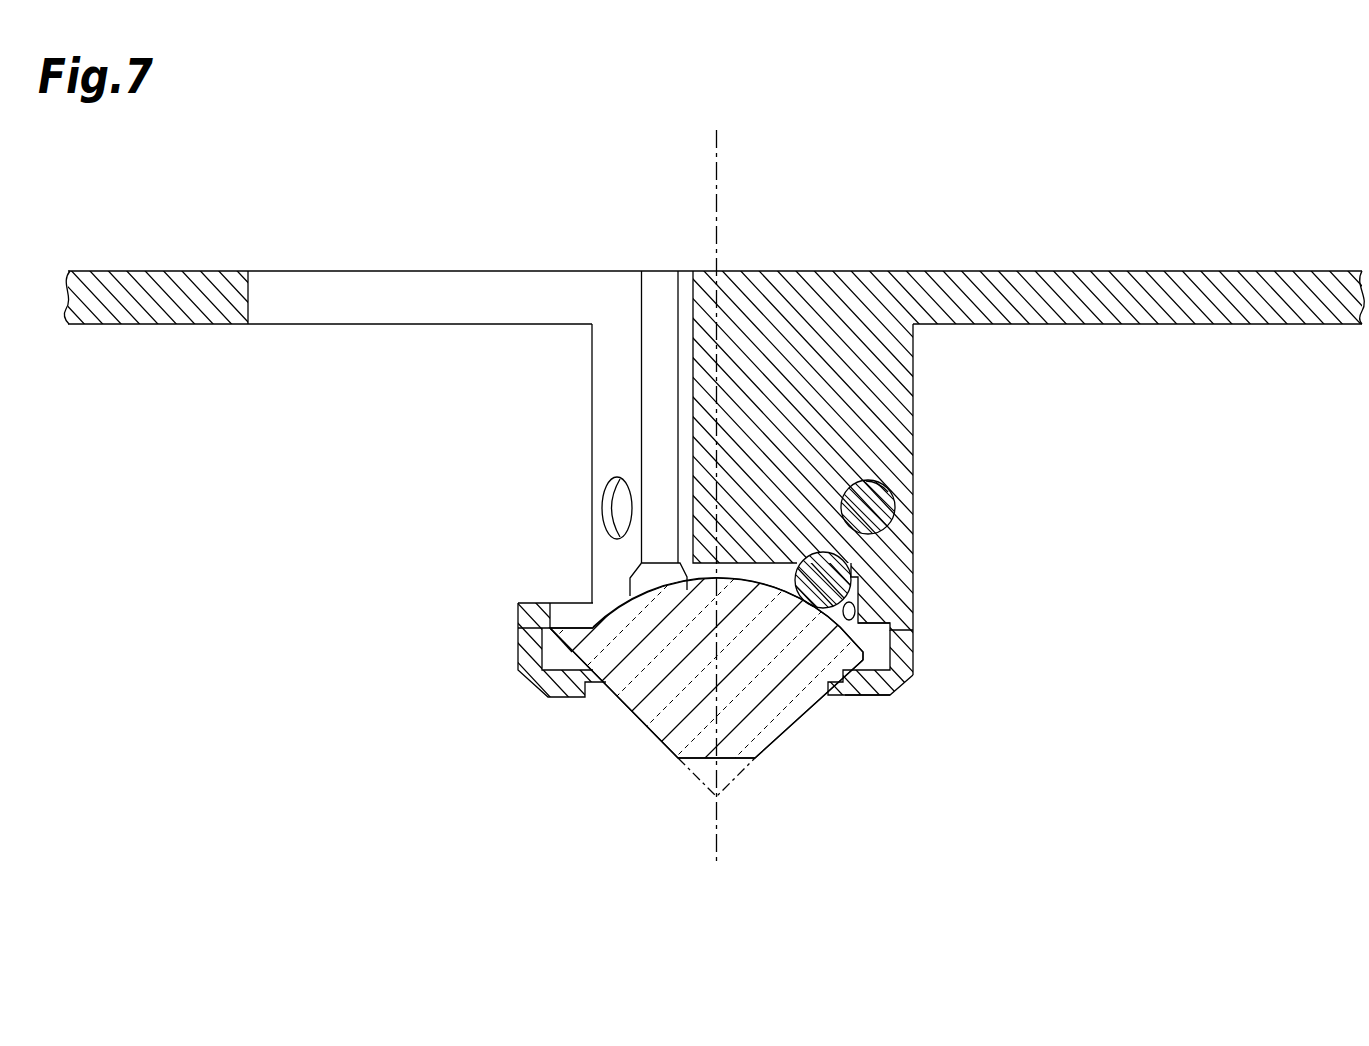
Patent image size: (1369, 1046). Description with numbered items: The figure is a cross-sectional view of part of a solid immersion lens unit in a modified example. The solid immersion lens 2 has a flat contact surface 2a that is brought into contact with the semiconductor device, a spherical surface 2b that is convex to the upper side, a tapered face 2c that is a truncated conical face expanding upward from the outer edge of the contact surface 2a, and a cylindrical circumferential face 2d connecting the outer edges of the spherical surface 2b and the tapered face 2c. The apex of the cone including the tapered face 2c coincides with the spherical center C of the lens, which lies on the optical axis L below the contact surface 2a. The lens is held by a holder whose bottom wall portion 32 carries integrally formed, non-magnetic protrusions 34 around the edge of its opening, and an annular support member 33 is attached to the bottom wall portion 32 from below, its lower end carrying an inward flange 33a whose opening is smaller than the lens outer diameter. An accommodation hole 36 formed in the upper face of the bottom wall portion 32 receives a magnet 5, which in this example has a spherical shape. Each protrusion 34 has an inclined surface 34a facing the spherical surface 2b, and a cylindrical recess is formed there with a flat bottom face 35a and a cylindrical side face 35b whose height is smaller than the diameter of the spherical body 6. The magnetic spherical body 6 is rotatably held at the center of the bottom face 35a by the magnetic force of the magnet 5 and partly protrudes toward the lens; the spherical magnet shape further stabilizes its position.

The solid immersion lens 2 is at (652, 732).
The contact surface 2a is at (730, 762).
The spherical surface 2b is at (630, 595).
The tapered face 2c is at (786, 734).
The circumferential face 2d is at (570, 652).
The magnet 5 is at (886, 515).
The spherical body 6 is at (837, 600).
The bottom wall portion 32 is at (1125, 289).
The support member 33 is at (911, 654).
The inward flange 33a is at (878, 690).
The protrusion 34 is at (901, 407).
The inclined surface 34a is at (866, 625).
The bottom face 35a is at (848, 569).
The side face 35b is at (855, 608).
The accommodation hole 36 is at (874, 486).
The optical axis L is at (722, 172).
The spherical center C is at (712, 797).